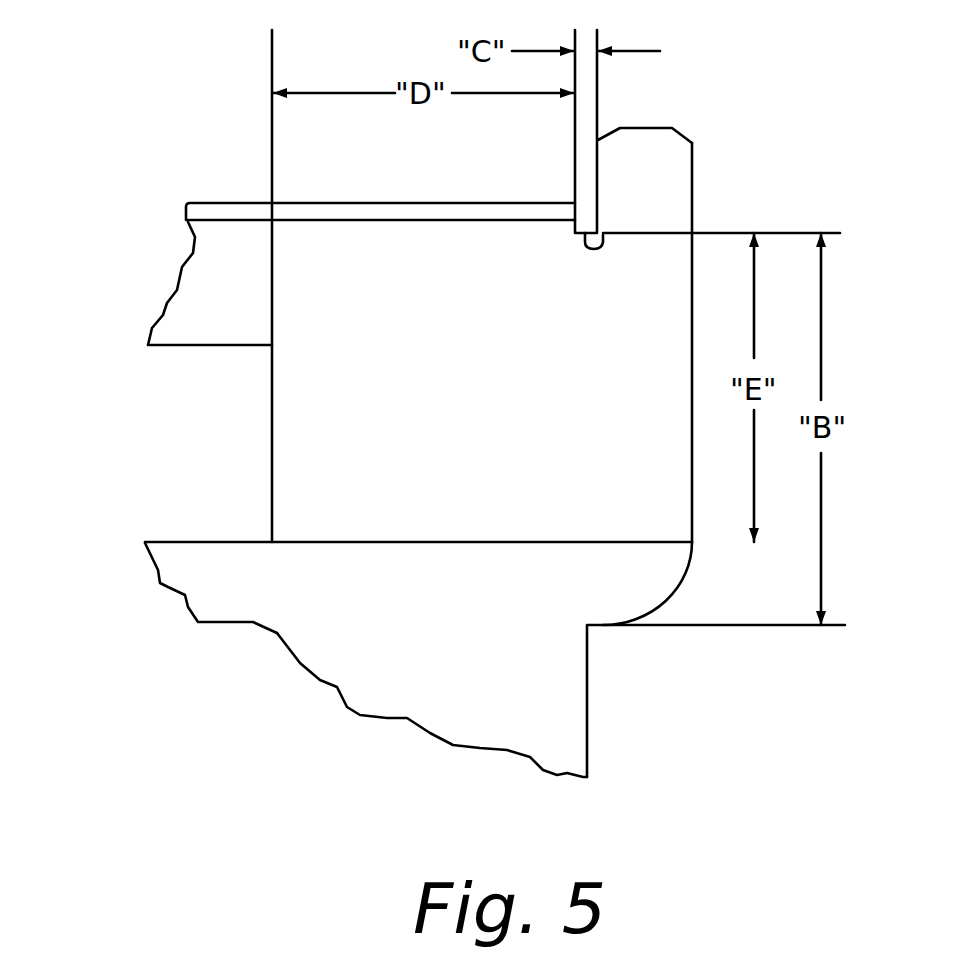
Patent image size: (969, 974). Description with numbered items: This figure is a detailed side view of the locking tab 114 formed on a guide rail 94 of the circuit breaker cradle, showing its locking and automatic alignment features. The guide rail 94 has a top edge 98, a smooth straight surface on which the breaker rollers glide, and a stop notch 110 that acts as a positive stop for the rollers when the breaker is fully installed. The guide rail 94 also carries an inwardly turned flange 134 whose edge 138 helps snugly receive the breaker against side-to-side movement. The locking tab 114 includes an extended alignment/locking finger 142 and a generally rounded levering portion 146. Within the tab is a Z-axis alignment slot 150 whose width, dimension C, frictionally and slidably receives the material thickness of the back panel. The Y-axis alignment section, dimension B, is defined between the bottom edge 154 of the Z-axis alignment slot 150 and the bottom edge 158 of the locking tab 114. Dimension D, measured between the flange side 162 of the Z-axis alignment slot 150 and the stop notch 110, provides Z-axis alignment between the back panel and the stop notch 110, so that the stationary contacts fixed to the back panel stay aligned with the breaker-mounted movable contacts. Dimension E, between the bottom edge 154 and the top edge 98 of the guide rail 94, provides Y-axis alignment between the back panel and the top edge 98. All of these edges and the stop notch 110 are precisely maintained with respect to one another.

The guide rail 94 is at (352, 643).
The top edge 98 is at (188, 542).
The stop notch 110 is at (270, 438).
The locking tab 114 is at (593, 359).
The inwardly turned flange 134 is at (252, 202).
The edge 138 is at (207, 210).
The alignment/locking finger 142 is at (652, 137).
The levering portion 146 is at (678, 595).
The Z-axis alignment slot 150 is at (587, 190).
The bottom edge 154 is at (603, 233).
The bottom edge 158 is at (603, 627).
The flange side 162 is at (570, 226).